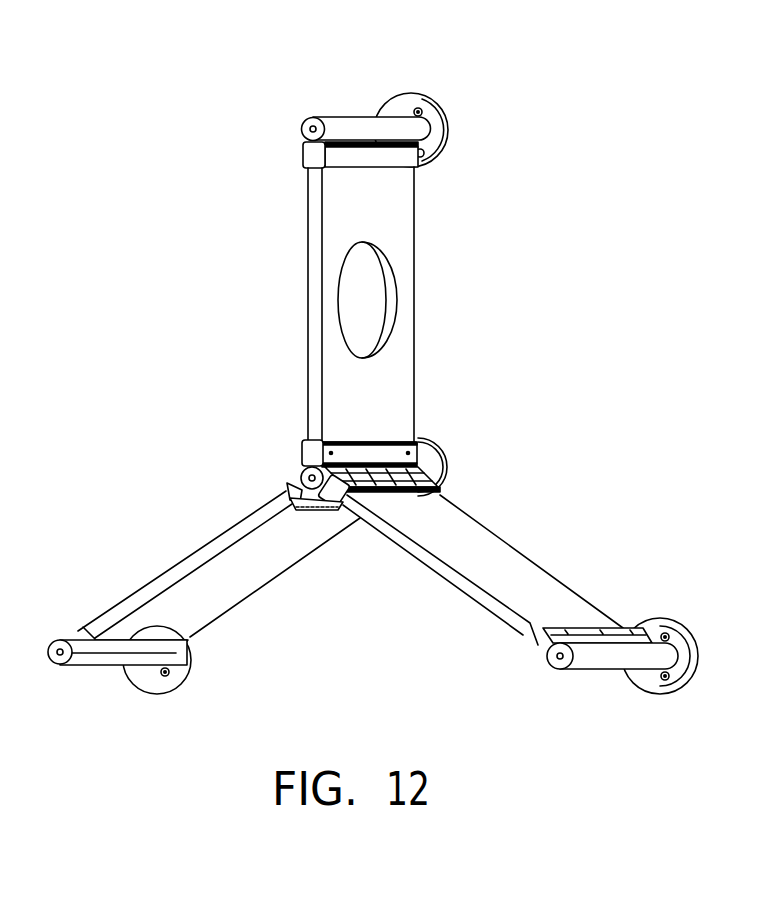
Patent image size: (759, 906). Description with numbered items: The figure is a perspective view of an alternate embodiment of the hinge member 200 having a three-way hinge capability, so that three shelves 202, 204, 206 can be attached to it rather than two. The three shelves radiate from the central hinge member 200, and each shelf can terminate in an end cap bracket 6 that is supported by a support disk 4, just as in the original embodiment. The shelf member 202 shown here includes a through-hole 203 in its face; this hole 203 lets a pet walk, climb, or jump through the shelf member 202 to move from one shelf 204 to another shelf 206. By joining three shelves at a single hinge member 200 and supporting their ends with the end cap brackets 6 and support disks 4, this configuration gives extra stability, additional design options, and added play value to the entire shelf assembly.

The hinge member 200 is at (258, 403).
The shelf member 202 is at (407, 392).
The through-hole 203 is at (377, 298).
The shelf 204 is at (495, 553).
The shelf 206 is at (232, 588).
The end cap bracket 6 is at (343, 122).
The support disk 4 is at (432, 95).